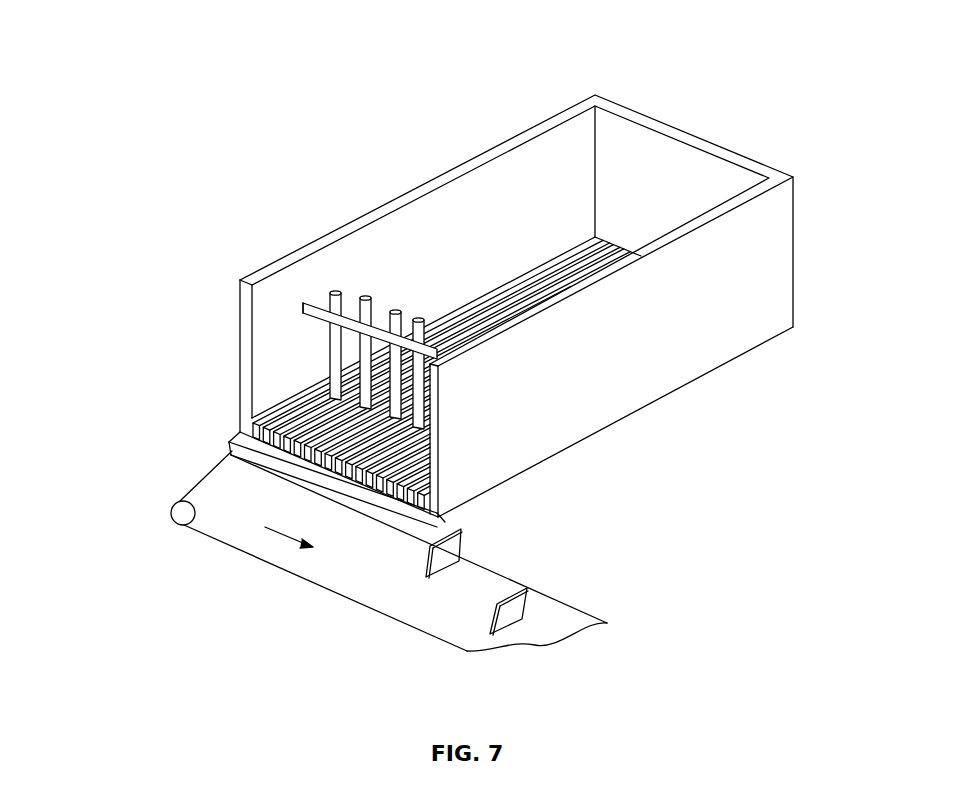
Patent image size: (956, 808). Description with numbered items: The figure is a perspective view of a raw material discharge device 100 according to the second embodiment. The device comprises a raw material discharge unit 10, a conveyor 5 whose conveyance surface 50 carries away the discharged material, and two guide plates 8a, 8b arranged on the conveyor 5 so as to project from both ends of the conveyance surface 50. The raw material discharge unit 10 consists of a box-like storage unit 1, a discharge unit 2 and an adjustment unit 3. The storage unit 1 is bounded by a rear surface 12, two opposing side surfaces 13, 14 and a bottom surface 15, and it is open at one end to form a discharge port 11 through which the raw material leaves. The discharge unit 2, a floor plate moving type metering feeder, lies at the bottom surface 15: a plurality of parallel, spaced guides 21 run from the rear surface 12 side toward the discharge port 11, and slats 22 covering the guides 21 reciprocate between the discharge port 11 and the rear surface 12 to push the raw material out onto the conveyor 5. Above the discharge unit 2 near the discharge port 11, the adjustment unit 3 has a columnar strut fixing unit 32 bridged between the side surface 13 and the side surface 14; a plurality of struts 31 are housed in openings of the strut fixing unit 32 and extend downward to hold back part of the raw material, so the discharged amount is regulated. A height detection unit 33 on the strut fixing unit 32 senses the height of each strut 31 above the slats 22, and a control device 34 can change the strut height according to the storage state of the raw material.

The raw material discharge device 100 is at (165, 108).
The storage unit 1 is at (511, 238).
The raw material discharge unit 10 is at (481, 152).
The discharge port 11 is at (443, 497).
The rear surface 12 is at (655, 152).
The side surface 13 is at (417, 240).
The side surface 14 is at (609, 345).
The bottom surface 15 is at (565, 258).
The discharge unit 2 is at (304, 424).
The guides 21 is at (455, 520).
The slats 22 is at (438, 508).
The adjustment unit 3 is at (314, 268).
The struts 31 is at (334, 291).
The strut fixing unit 32 is at (305, 300).
The height detection unit 33 is at (387, 330).
The control device 34 is at (246, 456).
The conveyor 5 is at (375, 551).
The conveyance surface 50 is at (375, 556).
The guide plate 8a is at (440, 548).
The guide plate 8b is at (517, 608).